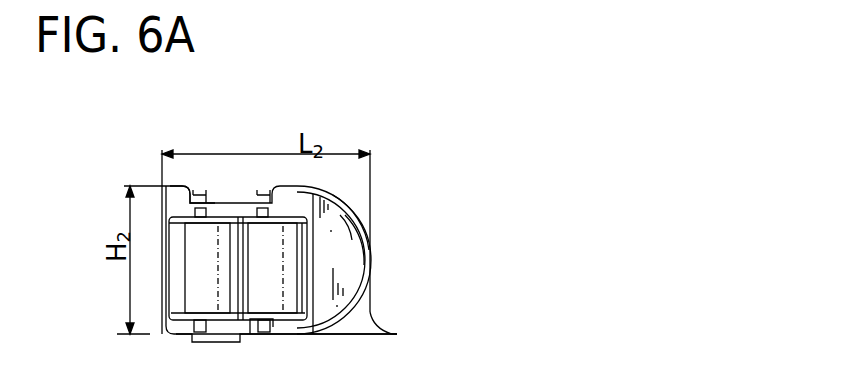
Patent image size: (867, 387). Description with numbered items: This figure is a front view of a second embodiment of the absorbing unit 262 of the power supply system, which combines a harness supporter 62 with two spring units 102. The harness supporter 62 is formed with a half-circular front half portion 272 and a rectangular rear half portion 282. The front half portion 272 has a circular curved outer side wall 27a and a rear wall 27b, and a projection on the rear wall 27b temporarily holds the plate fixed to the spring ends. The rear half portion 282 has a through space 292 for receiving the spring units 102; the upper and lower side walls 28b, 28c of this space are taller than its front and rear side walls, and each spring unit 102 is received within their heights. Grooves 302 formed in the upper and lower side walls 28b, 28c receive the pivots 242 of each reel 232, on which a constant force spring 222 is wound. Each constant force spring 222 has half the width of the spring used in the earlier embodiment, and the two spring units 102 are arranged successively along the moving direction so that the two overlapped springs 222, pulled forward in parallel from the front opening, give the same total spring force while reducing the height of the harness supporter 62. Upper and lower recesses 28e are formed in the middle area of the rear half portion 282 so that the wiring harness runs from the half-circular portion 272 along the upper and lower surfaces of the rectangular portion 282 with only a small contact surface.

The absorbing unit 262 is at (524, 205).
The rectangular rear half portion 282 is at (219, 201).
The upper side wall 28b is at (208, 196).
The lower side wall 28c is at (215, 330).
The recess 28e is at (190, 183).
The half-circular front half portion 272 is at (331, 190).
The circular curved outer side wall 27a is at (360, 222).
The rear wall 27b is at (350, 261).
The harness supporter 62 is at (358, 211).
The constant force spring 222 is at (135, 303).
The through space 292 is at (184, 242).
The spring unit 102 is at (245, 283).
The pivot 242 is at (267, 208).
The groove 302 is at (254, 210).
The reel 232 is at (204, 324).